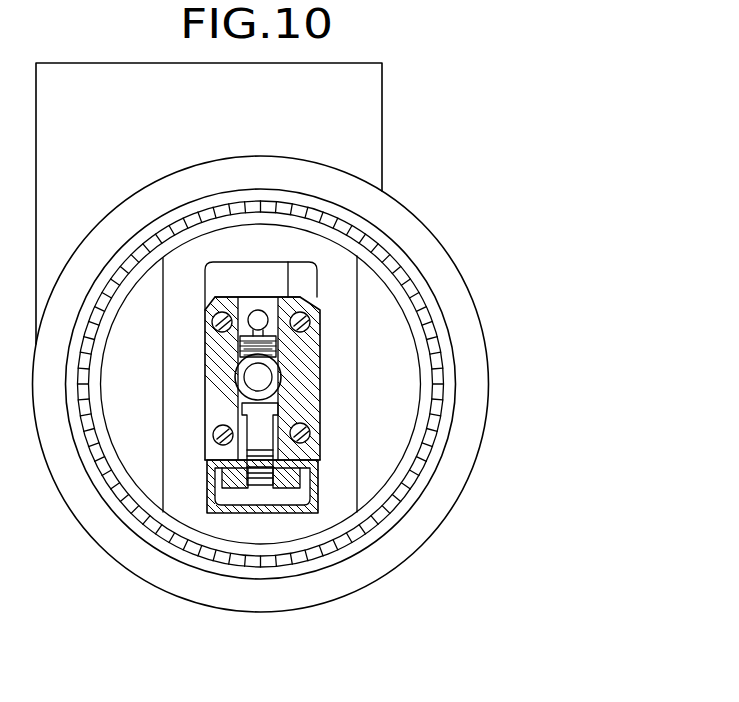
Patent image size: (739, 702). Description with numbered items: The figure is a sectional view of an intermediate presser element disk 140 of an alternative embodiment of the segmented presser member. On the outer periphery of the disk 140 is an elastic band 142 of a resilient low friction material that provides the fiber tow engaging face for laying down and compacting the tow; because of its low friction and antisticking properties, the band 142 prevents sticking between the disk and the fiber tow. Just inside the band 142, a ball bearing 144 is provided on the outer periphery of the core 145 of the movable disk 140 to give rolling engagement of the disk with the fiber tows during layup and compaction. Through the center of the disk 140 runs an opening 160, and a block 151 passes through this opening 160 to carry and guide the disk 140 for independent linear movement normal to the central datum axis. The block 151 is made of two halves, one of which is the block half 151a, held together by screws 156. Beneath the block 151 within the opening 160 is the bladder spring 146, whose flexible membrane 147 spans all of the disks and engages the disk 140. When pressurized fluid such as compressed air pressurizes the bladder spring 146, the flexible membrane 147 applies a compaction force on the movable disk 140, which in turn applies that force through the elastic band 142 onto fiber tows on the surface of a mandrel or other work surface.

The intermediate presser element disk 140 is at (492, 278).
The elastic band 142 is at (328, 585).
The ball bearing 144 is at (423, 453).
The core 145 is at (350, 397).
The bladder spring 146 is at (178, 512).
The flexible membrane 147 is at (322, 494).
The block 151 is at (410, 347).
The block half 151a is at (289, 262).
The screws 156 is at (213, 322).
The opening 160 is at (318, 277).